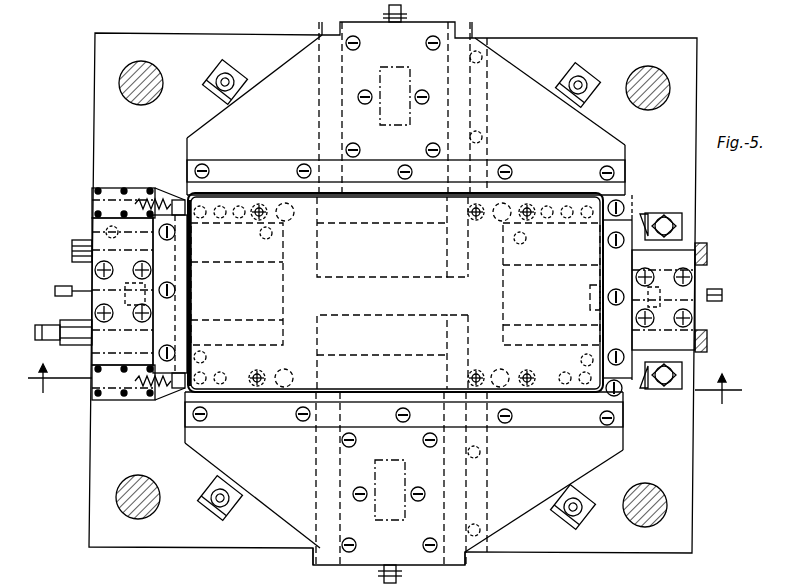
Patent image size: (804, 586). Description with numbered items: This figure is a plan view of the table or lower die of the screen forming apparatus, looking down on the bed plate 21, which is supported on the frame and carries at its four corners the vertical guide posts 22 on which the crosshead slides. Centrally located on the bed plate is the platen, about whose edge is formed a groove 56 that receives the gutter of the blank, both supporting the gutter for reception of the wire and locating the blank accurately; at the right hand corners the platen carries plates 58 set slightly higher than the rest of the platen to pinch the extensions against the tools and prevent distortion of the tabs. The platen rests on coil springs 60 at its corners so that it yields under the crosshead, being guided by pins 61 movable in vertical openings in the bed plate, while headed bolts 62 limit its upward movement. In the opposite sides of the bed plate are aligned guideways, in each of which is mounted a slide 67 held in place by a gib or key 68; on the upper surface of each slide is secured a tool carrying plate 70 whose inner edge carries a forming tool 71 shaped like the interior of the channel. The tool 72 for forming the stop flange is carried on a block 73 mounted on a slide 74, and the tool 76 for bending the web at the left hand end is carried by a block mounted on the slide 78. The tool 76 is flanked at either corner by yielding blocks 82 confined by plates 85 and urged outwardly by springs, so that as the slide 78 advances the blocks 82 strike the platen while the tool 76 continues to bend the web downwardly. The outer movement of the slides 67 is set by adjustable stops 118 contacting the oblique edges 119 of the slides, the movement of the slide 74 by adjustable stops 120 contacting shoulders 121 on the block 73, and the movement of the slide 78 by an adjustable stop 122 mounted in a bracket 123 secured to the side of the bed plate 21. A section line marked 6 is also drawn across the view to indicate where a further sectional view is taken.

The bed plate 21 is at (684, 522).
The vertical guide posts 22 is at (157, 78).
The groove 56 is at (191, 318).
The plates 58 is at (622, 209).
The coil springs 60 is at (221, 209).
The pins 61 is at (292, 214).
The headed bolts 62 is at (260, 222).
The slide 67 is at (321, 29).
The gib or key 68 is at (481, 39).
The tool carrying plate 70 is at (600, 136).
The forming tool 71 is at (620, 191).
The tool for forming the stop flange 72 is at (582, 400).
The block 73 is at (688, 252).
The slide 74 is at (707, 262).
The tool for bending the web 76 is at (194, 339).
The slide 78 is at (72, 255).
The yielding blocks 82 is at (178, 199).
The plates 85 is at (93, 189).
The adjustable stops 118 is at (221, 95).
The oblique edges 119 is at (283, 65).
The adjustable stops 120 is at (684, 222).
The shoulders 121 is at (650, 218).
The adjustable stop 122 is at (38, 327).
The bracket 123 is at (68, 325).
The section line 6 is at (383, 384).